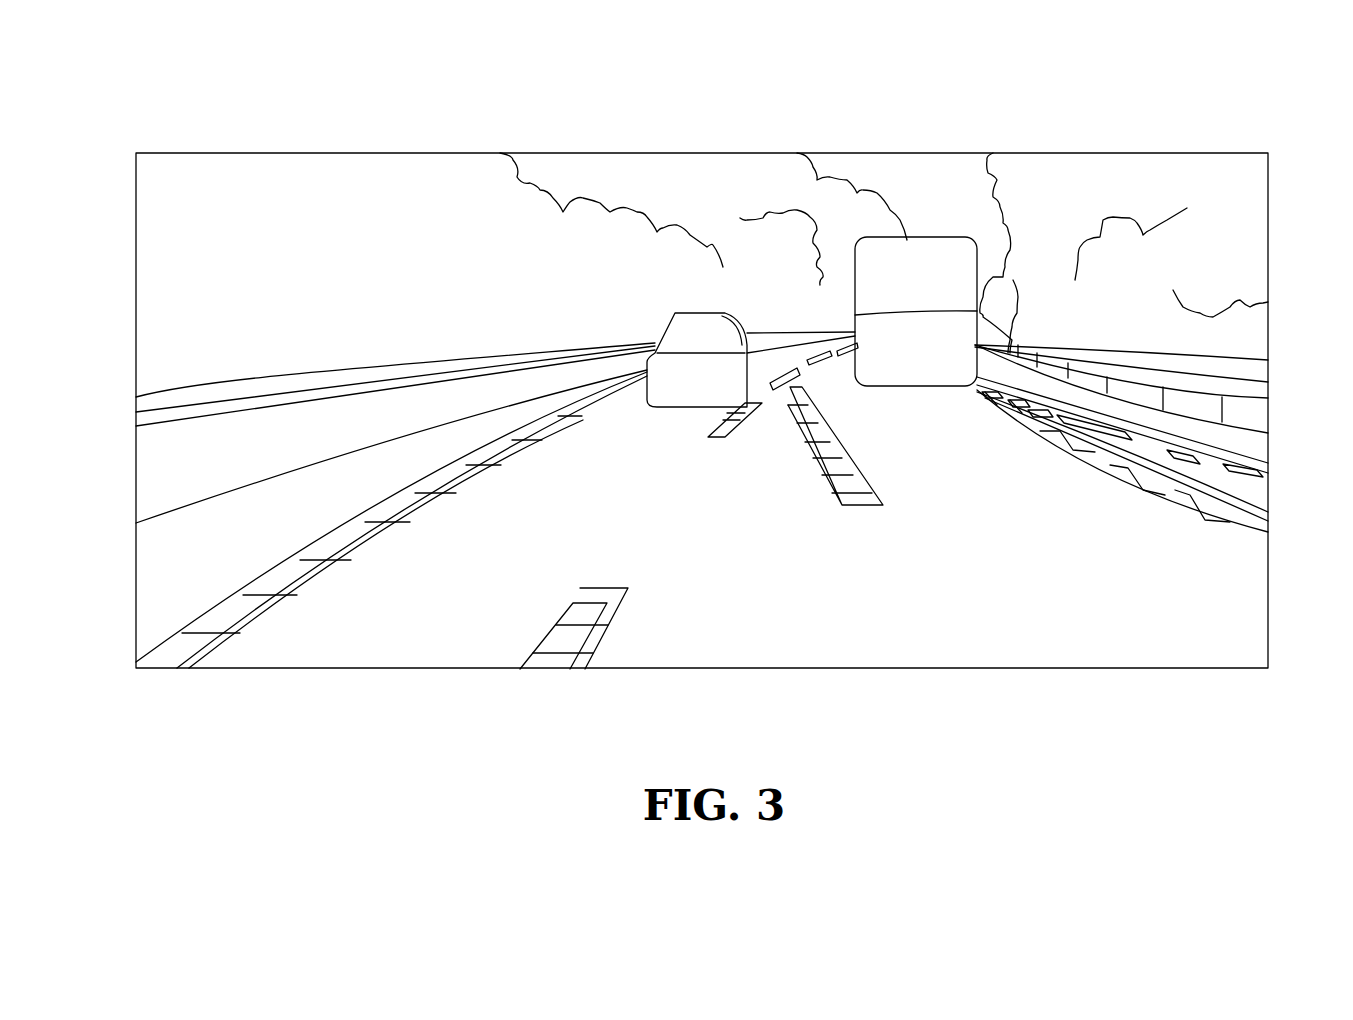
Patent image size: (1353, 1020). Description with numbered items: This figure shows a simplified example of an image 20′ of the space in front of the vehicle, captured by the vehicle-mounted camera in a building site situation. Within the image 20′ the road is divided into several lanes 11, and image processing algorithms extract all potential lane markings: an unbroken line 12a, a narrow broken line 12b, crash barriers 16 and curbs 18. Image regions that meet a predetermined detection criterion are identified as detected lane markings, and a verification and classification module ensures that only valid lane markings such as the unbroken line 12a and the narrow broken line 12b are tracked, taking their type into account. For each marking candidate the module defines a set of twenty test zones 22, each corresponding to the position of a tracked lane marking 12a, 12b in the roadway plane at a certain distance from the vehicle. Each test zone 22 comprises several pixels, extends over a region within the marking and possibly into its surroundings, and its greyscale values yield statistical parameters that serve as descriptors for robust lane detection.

The image 20′ is at (330, 152).
The lane 11 is at (643, 514).
The lane marking in the form of an unbroken line 12a is at (175, 647).
The narrow broken line lane marking 12b is at (547, 657).
The crash barrier 16 is at (330, 377).
The curb 18 is at (219, 493).
The test zone 22 is at (812, 423).